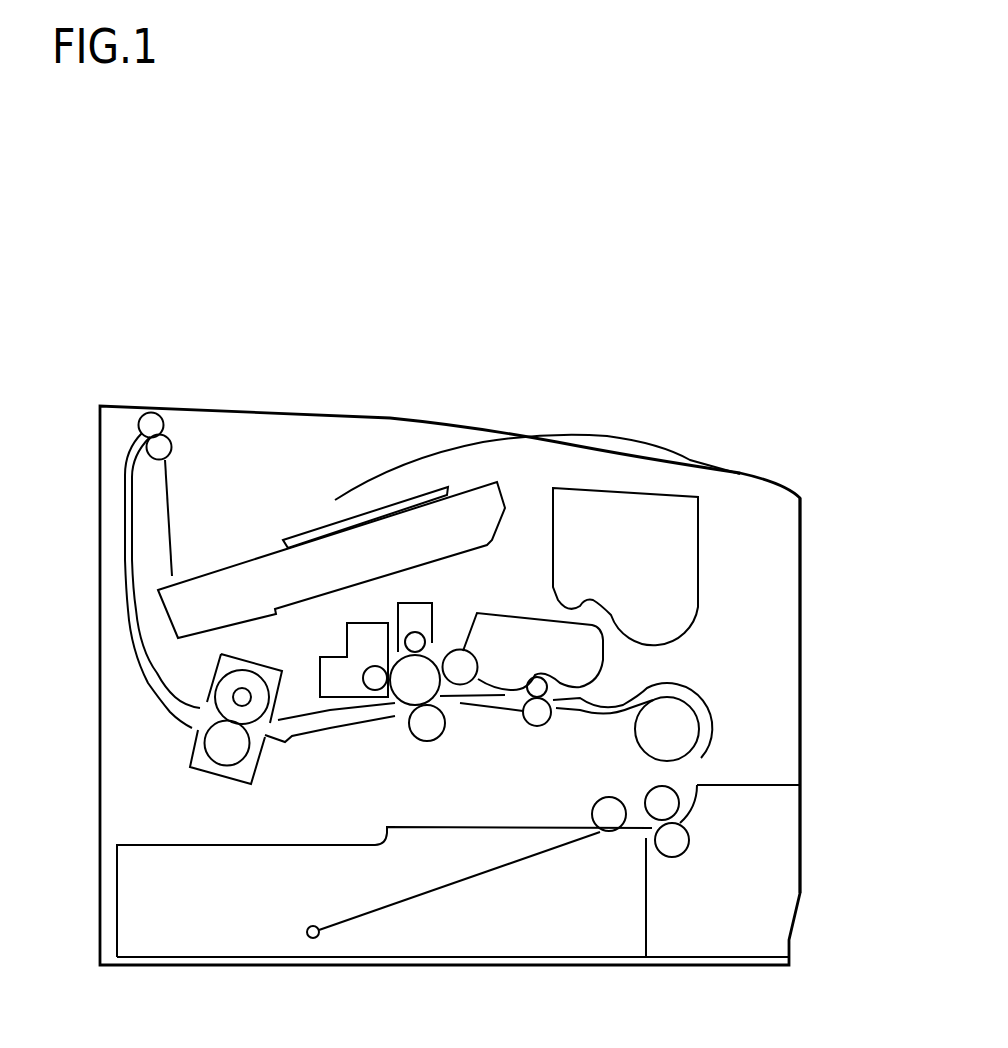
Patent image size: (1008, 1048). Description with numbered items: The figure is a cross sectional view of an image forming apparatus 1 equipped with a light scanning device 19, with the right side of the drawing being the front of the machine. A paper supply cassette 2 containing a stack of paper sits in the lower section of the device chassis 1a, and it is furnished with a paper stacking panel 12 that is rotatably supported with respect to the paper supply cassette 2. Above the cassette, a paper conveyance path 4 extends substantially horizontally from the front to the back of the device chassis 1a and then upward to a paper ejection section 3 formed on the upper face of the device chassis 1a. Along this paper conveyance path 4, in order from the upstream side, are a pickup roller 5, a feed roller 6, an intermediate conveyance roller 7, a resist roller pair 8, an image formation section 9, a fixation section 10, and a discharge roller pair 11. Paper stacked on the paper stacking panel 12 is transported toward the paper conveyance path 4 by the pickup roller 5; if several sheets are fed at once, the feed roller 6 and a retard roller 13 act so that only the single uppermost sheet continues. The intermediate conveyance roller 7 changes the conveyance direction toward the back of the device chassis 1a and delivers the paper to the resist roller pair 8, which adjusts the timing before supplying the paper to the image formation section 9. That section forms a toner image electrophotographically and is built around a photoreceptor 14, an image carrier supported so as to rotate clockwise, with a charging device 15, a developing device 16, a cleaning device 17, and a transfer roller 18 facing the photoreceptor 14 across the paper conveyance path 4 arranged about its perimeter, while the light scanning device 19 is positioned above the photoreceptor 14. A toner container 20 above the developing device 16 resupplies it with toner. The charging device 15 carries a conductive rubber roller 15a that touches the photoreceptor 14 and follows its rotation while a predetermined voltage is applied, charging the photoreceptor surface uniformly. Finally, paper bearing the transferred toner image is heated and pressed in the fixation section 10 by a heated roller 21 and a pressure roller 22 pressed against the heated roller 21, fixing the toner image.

The image forming apparatus 1 is at (661, 415).
The device chassis 1a is at (800, 623).
The paper supply cassette 2 is at (805, 877).
The paper ejection section 3 is at (278, 523).
The paper conveyance path 4 is at (127, 640).
The pickup roller 5 is at (609, 814).
The feed roller 6 is at (663, 805).
The intermediate conveyance roller 7 is at (667, 729).
The resist roller pair 8 is at (560, 715).
The image formation section 9 is at (418, 745).
The fixation section 10 is at (183, 737).
The discharge roller pair 11 is at (165, 430).
The paper stacking panel 12 is at (447, 892).
The retard roller 13 is at (672, 840).
The photoreceptor 14 is at (416, 678).
The charging device 15 is at (415, 613).
The conductive rubber roller 15a is at (415, 641).
The developing device 16 is at (517, 650).
The cleaning device 17 is at (352, 678).
The transfer roller 18 is at (427, 723).
The light scanning device 19 is at (380, 553).
The toner container 20 is at (650, 563).
The heated roller 21 is at (242, 697).
The pressure roller 22 is at (227, 743).